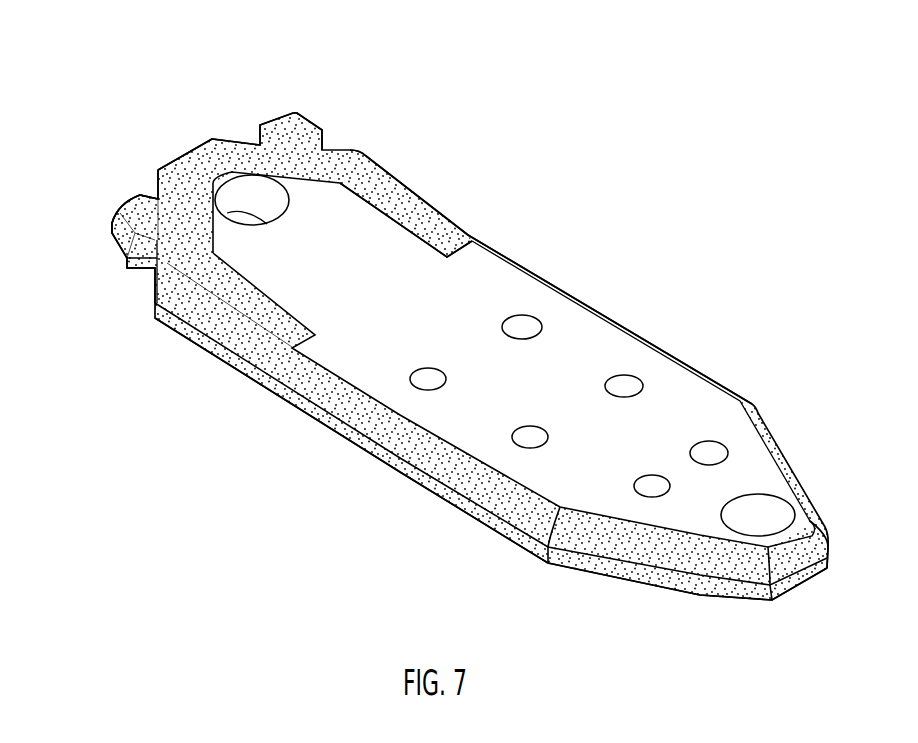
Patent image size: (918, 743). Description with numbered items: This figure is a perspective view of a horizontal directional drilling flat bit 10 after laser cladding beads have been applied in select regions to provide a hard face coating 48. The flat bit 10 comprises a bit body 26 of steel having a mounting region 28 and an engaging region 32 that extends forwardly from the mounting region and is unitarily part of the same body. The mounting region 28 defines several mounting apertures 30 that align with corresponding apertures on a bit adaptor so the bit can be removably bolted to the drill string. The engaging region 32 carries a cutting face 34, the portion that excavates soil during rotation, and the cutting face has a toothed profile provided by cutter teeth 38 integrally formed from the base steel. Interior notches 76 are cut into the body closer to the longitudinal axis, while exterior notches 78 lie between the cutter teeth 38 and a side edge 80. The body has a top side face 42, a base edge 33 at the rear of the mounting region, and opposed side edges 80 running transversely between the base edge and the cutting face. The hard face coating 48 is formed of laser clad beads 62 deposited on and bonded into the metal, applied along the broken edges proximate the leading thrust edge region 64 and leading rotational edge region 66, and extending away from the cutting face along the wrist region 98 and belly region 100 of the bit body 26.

The flat bit 10 is at (278, 456).
The bit body 26 is at (407, 333).
The mounting region 28 is at (615, 357).
The mounting apertures 30 is at (713, 455).
The engaging region 32 is at (325, 250).
The base edge 33 is at (818, 593).
The cutting face 34 is at (75, 220).
The cutter teeth 38 is at (292, 105).
The top side face 42 is at (485, 302).
The hard face coating 48 is at (407, 202).
The laser clad beads 62 is at (600, 537).
The leading thrust edge region 64 is at (181, 142).
The leading rotational edge region 66 is at (403, 152).
The interior notches 76 is at (150, 187).
The exterior notches 78 is at (143, 278).
The side edges 80 is at (253, 403).
The wrist region 98 is at (650, 598).
The belly region 100 is at (448, 533).